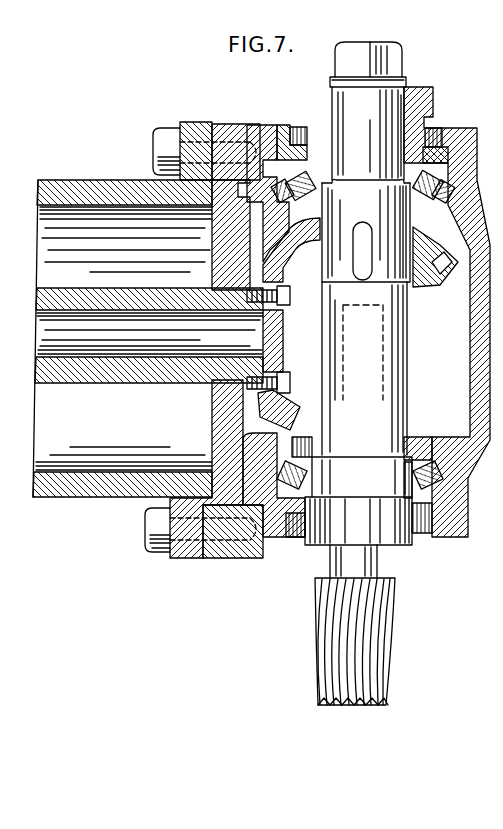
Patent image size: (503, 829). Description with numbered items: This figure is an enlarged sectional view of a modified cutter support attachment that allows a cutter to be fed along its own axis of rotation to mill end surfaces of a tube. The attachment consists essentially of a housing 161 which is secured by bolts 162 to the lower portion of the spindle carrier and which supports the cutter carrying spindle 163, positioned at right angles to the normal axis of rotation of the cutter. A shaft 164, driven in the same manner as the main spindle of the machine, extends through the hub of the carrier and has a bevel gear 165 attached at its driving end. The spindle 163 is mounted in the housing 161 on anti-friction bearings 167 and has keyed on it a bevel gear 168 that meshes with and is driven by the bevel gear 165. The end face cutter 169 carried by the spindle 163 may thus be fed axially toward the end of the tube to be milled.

The housing 161 is at (482, 350).
The bolts 162 is at (152, 138).
The cutter carrying spindle 163 is at (404, 418).
The shaft 164 is at (70, 297).
The bevel gear 165 is at (297, 272).
The anti-friction bearings 167 is at (441, 165).
The bevel gear 168 is at (438, 268).
The end face cutter 169 is at (378, 632).